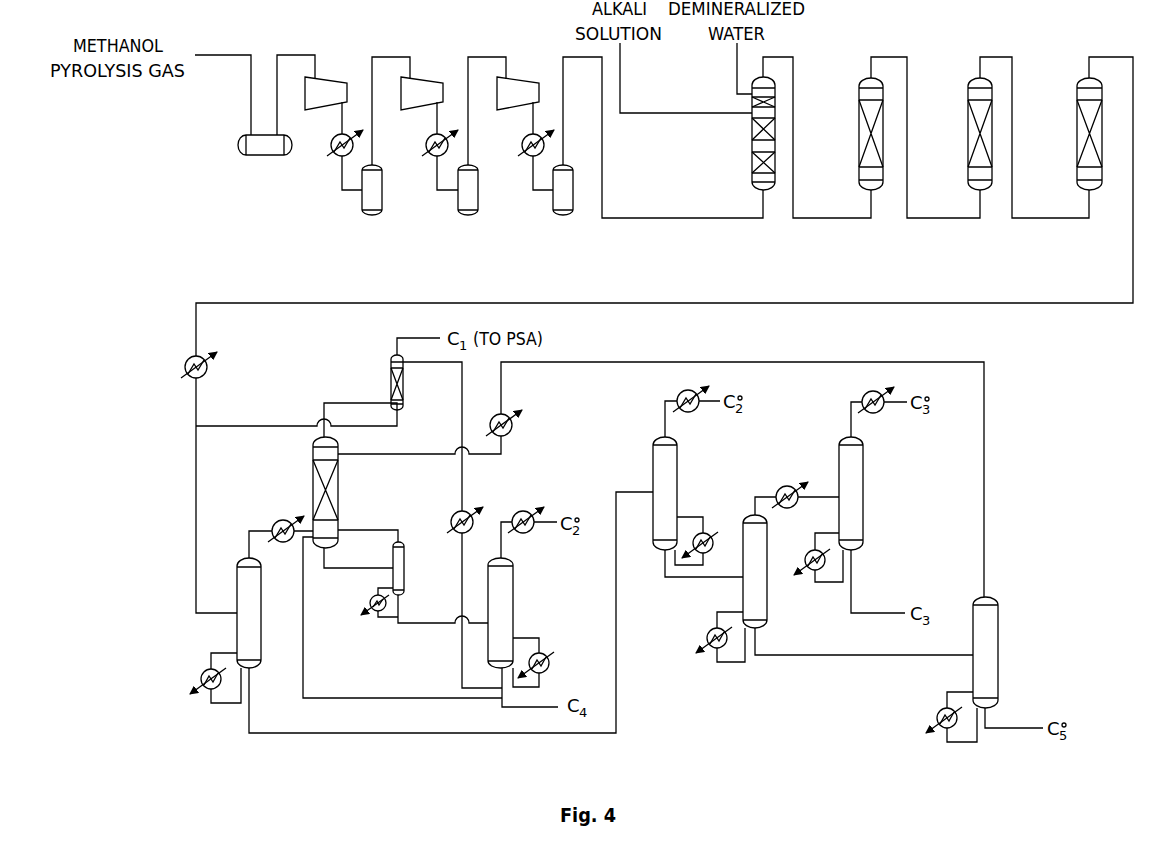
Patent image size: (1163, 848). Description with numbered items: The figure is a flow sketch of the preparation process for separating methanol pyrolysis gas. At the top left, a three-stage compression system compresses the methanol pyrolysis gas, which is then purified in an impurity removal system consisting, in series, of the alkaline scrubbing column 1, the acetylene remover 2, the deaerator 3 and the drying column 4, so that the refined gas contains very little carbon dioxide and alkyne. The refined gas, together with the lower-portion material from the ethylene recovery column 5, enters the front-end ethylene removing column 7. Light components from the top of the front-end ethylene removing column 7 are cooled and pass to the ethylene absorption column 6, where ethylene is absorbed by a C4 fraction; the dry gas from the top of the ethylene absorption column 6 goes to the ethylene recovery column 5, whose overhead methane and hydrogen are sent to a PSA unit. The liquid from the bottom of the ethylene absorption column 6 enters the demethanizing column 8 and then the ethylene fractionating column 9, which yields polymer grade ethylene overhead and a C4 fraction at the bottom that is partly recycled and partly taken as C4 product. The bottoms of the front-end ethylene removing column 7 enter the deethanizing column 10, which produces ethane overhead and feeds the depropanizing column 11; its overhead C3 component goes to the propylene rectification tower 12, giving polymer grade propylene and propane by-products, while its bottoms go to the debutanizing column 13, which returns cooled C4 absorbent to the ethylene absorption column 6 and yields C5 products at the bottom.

The alkaline scrubbing column 1 is at (752, 148).
The acetylene remover 2 is at (859, 150).
The deaerator 3 is at (968, 150).
The drying column 4 is at (1077, 150).
The ethylene recovery column 5 is at (391, 378).
The ethylene absorption column 6 is at (313, 490).
The front-end ethylene removing column 7 is at (237, 635).
The demethanizing column 8 is at (404, 570).
The ethylene fractionating column 9 is at (513, 609).
The deethanizing column 10 is at (677, 473).
The depropanizing column 11 is at (767, 608).
The propylene rectification tower 12 is at (863, 488).
The debutanizing column 13 is at (998, 652).